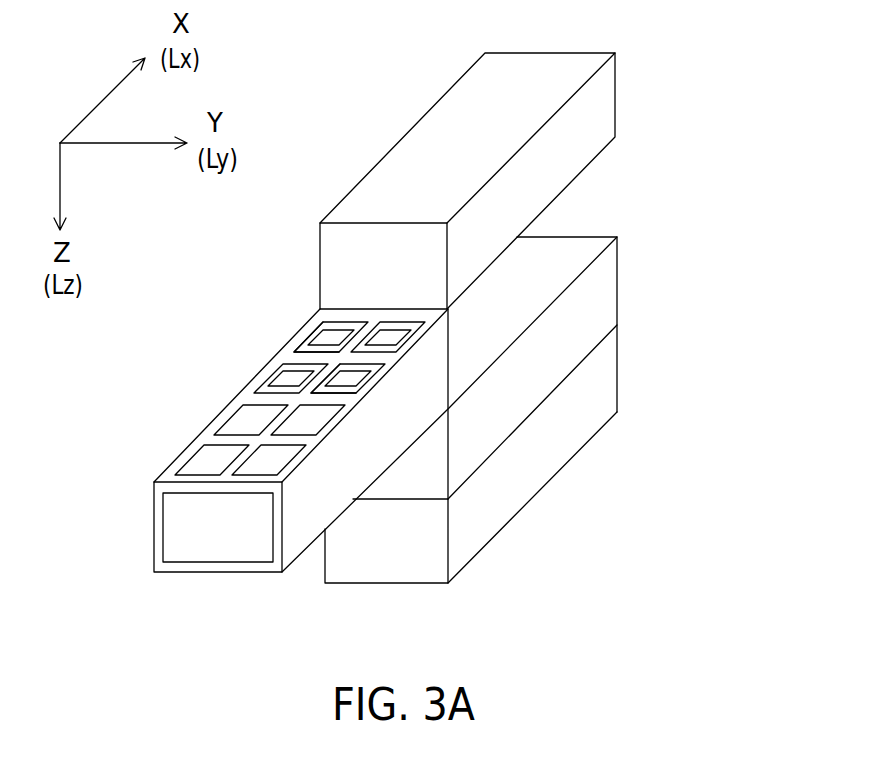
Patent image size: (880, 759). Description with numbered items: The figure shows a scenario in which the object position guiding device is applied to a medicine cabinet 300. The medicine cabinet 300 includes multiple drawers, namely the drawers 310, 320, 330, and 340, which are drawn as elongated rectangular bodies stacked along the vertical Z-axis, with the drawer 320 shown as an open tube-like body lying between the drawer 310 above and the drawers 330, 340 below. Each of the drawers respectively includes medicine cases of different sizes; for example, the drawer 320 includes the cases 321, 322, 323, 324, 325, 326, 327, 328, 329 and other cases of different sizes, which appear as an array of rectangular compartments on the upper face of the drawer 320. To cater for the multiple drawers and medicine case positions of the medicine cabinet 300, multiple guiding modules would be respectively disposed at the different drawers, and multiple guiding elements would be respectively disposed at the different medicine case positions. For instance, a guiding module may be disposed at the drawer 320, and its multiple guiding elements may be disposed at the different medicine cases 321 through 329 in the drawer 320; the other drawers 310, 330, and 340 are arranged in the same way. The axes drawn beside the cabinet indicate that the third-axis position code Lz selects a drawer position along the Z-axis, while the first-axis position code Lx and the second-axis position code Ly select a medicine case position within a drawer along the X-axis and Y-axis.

The medicine cabinet 300 is at (510, 607).
The drawer 310 is at (617, 98).
The drawer 320 is at (217, 573).
The case 321 is at (328, 330).
The case 322 is at (356, 325).
The case 323 is at (400, 328).
The case 324 is at (330, 337).
The case 325 is at (352, 370).
The case 326 is at (383, 343).
The case 327 is at (295, 383).
The case 328 is at (380, 362).
The case 329 is at (355, 385).
The drawer 330 is at (618, 284).
The drawer 340 is at (388, 585).